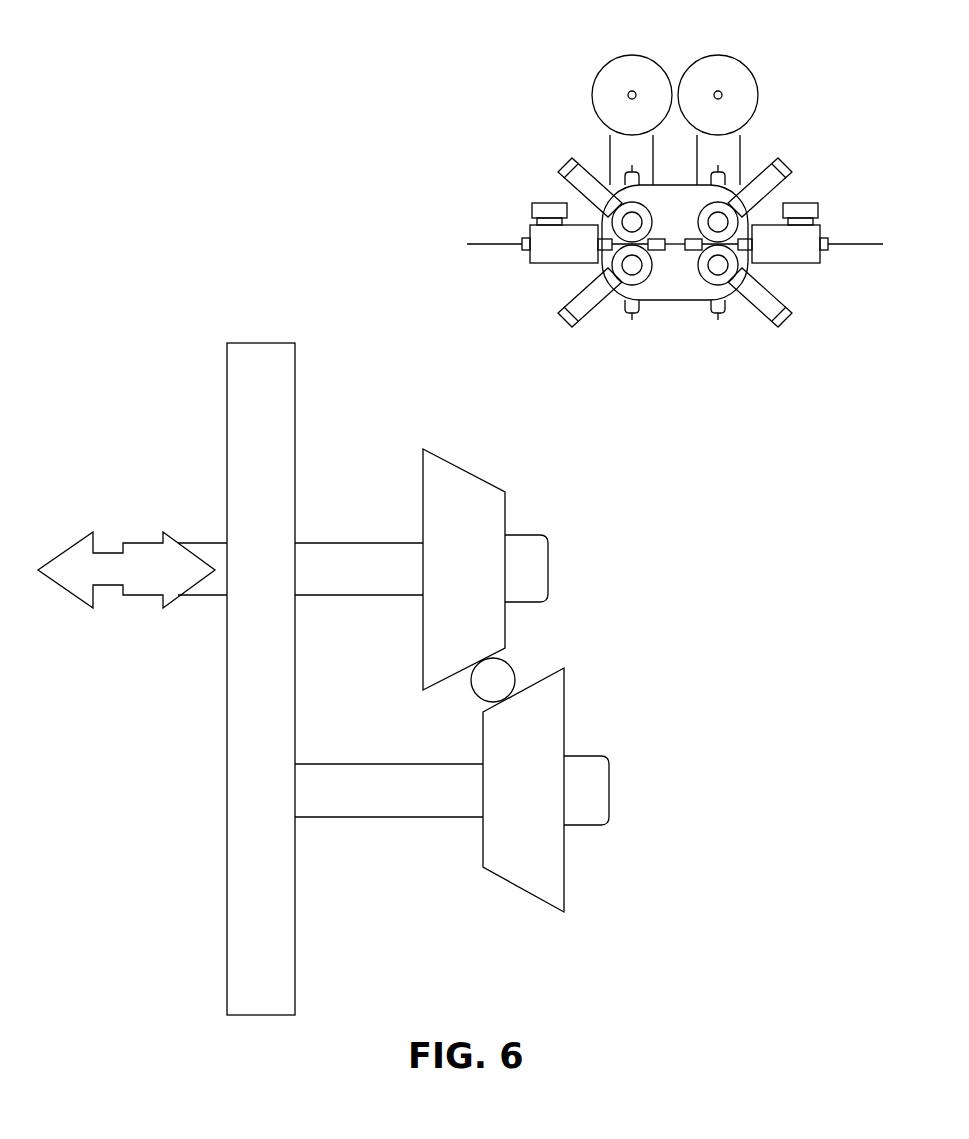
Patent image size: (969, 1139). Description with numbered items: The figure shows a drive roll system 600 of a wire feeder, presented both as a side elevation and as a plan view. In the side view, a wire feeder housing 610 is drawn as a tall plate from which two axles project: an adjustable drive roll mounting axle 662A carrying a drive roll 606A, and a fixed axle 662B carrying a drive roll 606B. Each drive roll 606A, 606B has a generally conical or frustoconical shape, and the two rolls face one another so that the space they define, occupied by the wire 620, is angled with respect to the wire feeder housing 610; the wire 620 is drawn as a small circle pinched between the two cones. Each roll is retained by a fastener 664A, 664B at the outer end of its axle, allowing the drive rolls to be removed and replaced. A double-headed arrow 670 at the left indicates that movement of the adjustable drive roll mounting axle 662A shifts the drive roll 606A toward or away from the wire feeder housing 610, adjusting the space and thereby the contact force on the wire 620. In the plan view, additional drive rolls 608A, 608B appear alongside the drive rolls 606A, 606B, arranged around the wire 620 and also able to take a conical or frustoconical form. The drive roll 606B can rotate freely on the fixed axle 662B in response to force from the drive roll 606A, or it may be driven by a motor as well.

The drive roll system 600 is at (483, 72).
The drive roll 606A is at (452, 462).
The drive roll 606B is at (538, 902).
The drive roll 608A is at (603, 270).
The drive roll 608B is at (747, 270).
The wire feeder housing 610 is at (260, 343).
The wire 620 is at (512, 667).
The adjustable drive roll mounting axle 662A is at (312, 543).
The fixed axle 662B is at (312, 764).
The fastener 664A is at (552, 555).
The fastener 664B is at (583, 827).
The arrow 670 is at (67, 545).